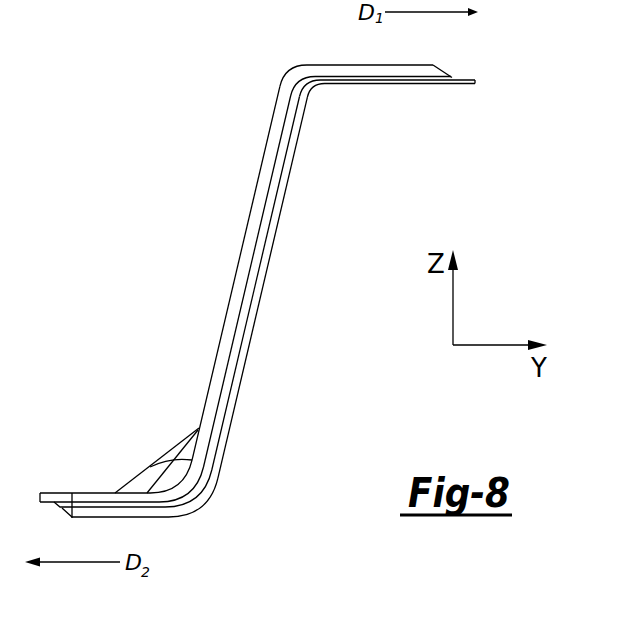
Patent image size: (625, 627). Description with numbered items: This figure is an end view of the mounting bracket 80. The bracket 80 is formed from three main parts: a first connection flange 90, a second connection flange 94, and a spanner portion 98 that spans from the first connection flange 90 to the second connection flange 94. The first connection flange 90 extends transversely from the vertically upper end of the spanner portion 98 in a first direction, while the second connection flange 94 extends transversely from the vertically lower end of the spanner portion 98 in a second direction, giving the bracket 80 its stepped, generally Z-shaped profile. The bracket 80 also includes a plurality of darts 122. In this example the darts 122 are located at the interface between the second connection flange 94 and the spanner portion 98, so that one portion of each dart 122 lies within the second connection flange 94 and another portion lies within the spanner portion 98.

The mounting bracket 80 is at (246, 80).
The first connection flange 90 is at (350, 65).
The spanner portion 98 is at (258, 215).
The second connection flange 94 is at (150, 514).
The darts 122 is at (163, 453).